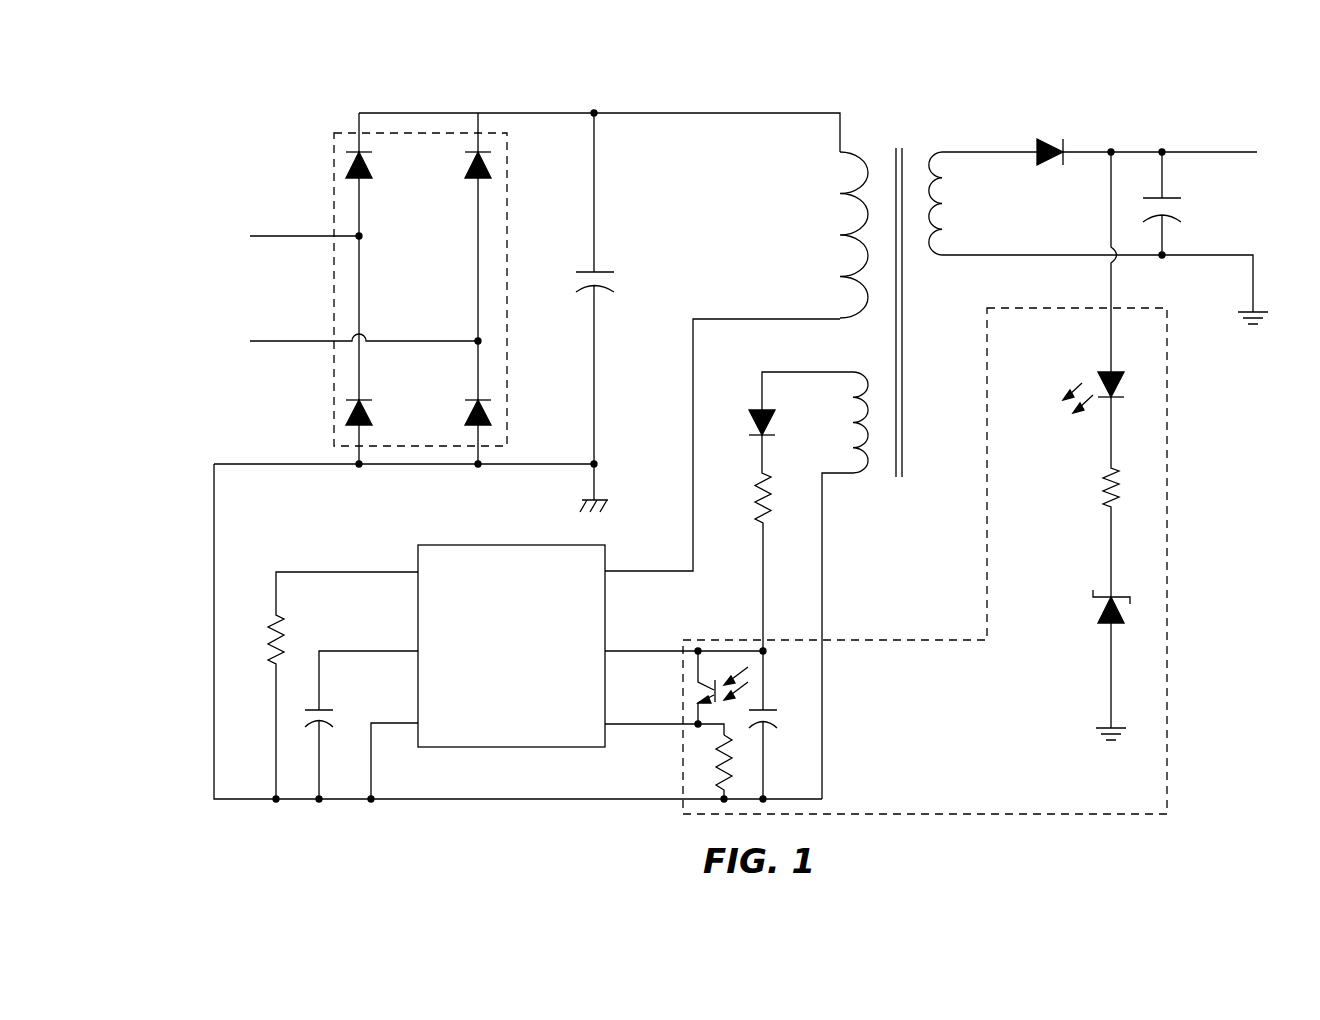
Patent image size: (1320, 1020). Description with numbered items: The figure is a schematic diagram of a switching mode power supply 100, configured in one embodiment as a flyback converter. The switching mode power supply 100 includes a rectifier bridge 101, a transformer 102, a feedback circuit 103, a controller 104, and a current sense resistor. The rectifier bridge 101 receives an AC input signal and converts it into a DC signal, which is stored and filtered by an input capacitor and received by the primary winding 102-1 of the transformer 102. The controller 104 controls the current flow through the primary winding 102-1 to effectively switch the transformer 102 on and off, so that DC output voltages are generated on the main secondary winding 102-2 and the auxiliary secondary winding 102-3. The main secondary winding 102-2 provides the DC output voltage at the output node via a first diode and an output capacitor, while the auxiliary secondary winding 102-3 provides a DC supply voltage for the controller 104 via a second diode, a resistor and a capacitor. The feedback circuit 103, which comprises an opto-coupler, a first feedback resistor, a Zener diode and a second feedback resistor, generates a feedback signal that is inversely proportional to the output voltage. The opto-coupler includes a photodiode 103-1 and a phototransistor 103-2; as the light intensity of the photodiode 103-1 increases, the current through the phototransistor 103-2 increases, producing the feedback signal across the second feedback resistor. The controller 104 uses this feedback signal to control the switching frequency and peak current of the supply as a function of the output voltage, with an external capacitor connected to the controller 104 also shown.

The switching mode power supply 100 is at (282, 146).
The rectifier bridge 101 is at (507, 378).
The transformer 102 is at (901, 145).
The primary winding 102-1 is at (835, 200).
The main secondary winding 102-2 is at (940, 262).
The auxiliary secondary winding 102-3 is at (857, 480).
The feedback circuit 103 is at (1168, 627).
The photodiode 103-1 is at (1074, 373).
The phototransistor 103-2 is at (752, 672).
The controller 104 is at (493, 545).